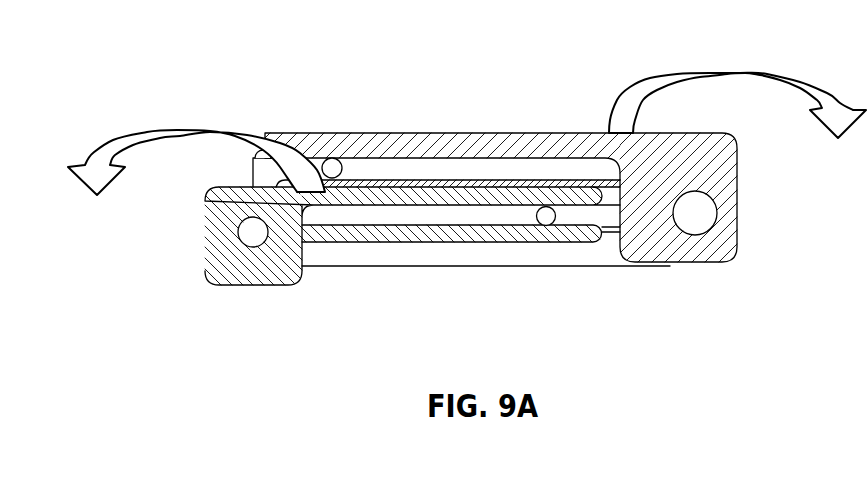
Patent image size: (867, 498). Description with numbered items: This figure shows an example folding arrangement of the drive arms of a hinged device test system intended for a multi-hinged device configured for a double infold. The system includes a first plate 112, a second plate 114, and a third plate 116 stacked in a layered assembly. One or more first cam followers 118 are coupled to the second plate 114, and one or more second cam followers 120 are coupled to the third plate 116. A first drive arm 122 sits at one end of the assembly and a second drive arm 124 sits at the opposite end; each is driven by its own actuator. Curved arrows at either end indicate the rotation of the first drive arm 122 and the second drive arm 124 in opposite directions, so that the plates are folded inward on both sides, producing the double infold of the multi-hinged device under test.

The first plate 112 is at (431, 267).
The second plate 114 is at (347, 218).
The third plate 116 is at (562, 163).
The first cam follower 118 is at (545, 222).
The second cam follower 120 is at (331, 166).
The first drive arm 122 is at (207, 255).
The second drive arm 124 is at (737, 170).